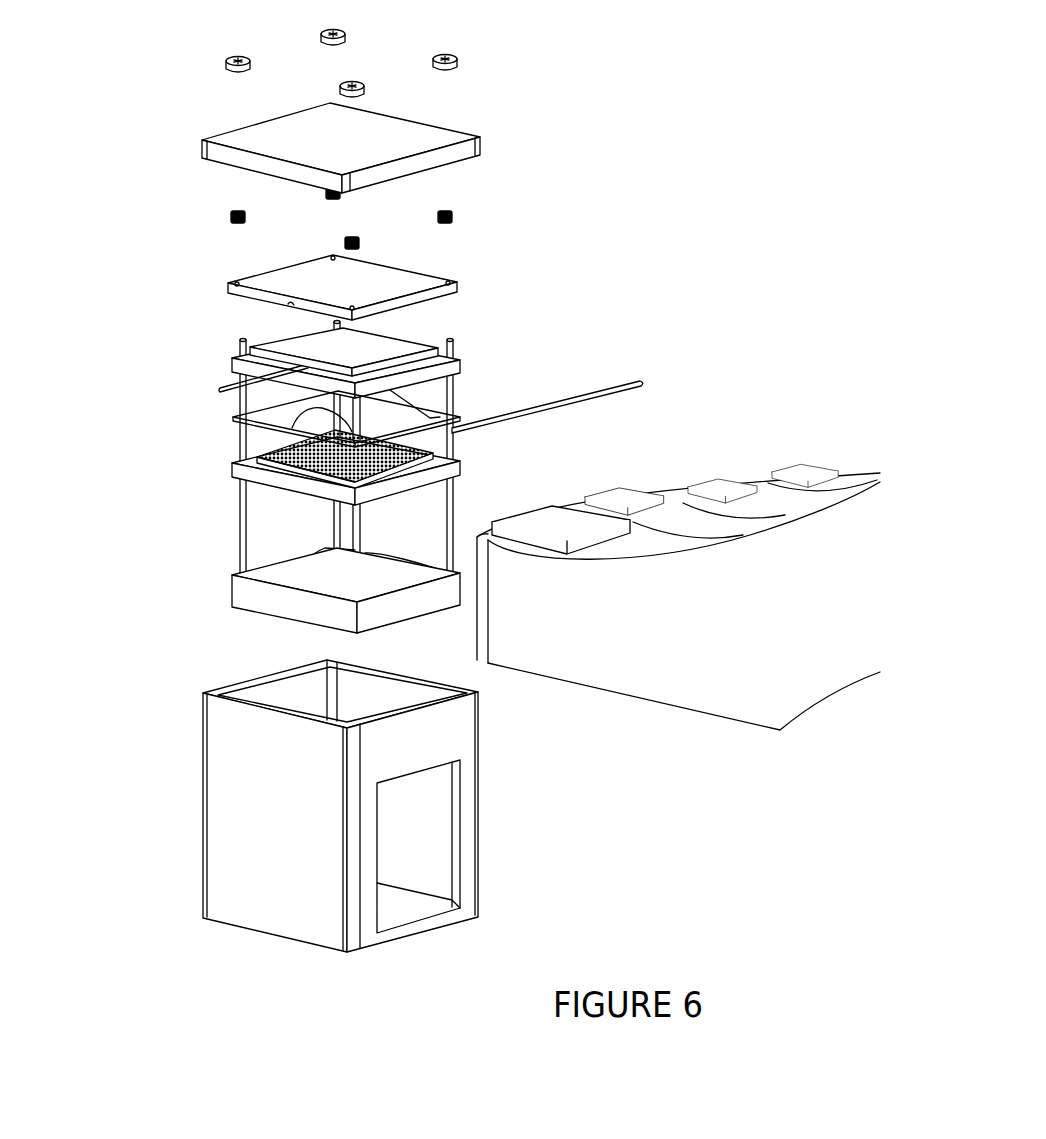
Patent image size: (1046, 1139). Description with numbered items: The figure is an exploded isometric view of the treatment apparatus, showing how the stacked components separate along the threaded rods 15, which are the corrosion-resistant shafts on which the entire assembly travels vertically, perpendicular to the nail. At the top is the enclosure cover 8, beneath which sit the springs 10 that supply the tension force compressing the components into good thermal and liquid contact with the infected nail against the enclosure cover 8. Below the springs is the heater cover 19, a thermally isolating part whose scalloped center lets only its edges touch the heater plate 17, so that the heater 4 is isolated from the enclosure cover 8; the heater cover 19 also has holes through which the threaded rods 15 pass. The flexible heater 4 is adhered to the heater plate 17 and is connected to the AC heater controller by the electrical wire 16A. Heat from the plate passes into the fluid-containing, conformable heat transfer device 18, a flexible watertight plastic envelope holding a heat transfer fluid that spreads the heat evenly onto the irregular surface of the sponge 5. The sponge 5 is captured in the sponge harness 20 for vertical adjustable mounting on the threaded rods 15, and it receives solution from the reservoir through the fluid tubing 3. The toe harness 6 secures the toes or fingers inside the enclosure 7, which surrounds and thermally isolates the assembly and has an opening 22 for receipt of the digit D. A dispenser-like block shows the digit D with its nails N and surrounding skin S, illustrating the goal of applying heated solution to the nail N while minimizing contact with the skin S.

The enclosure cover 8 is at (482, 135).
The spring 10 is at (223, 210).
The heater cover 19 is at (458, 278).
The heater 4 is at (312, 343).
The heater plate 17 is at (465, 368).
The fluid tubing 3 is at (592, 390).
The electrical wire 16A is at (213, 387).
The fluid-containing conformable heat transfer device 18 is at (233, 417).
The sponge harness 20 is at (225, 480).
The sponge 5 is at (283, 470).
The threaded rod 15 is at (234, 535).
The toe harness 6 is at (410, 612).
The opening 22 is at (415, 840).
The enclosure 7 is at (200, 922).
The nail N is at (547, 517).
The digit D is at (560, 625).
The skin S is at (640, 555).